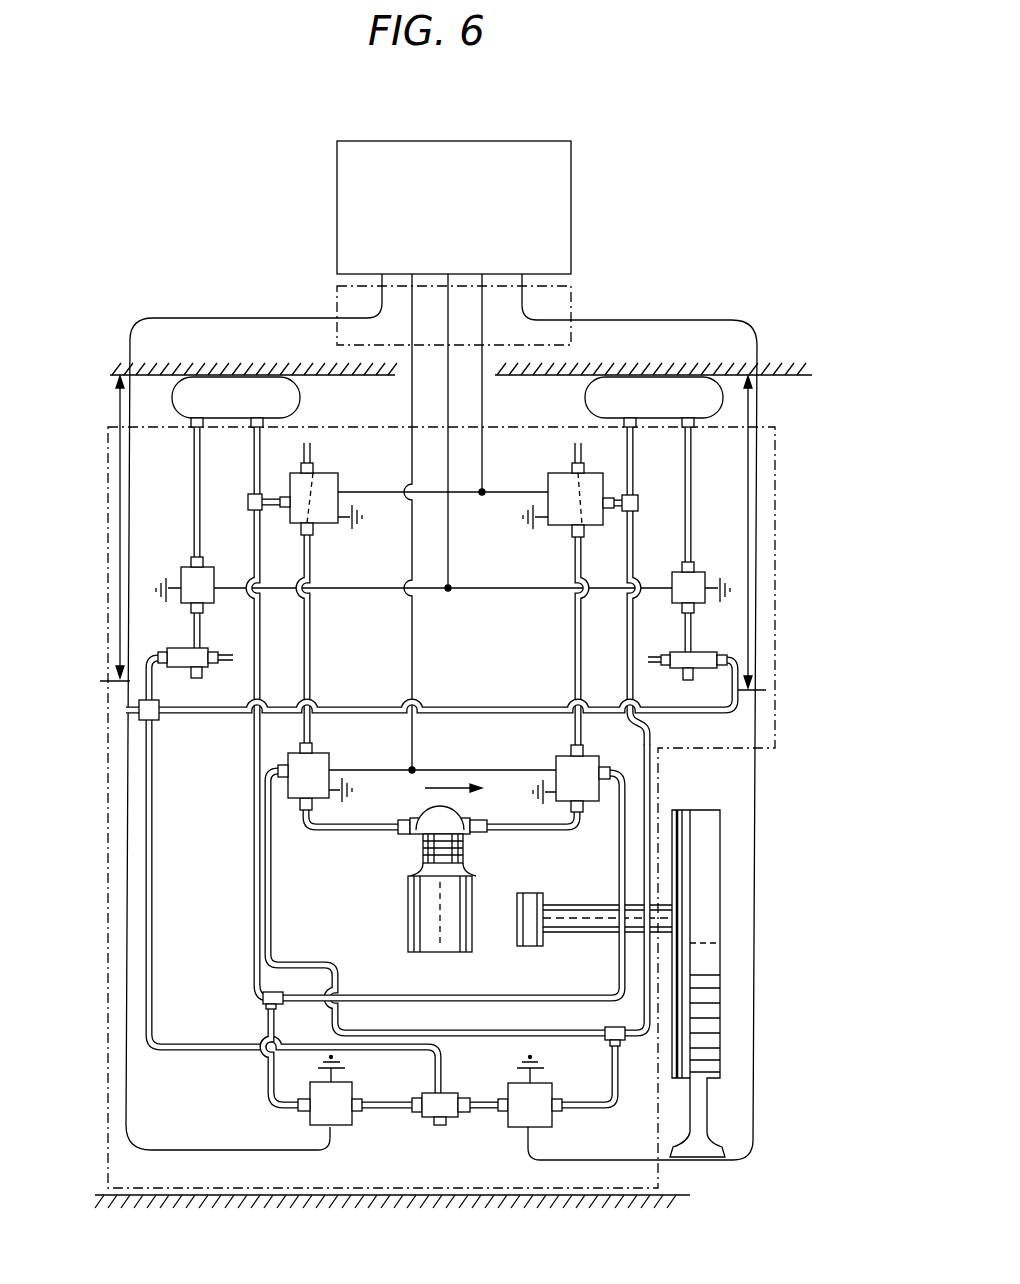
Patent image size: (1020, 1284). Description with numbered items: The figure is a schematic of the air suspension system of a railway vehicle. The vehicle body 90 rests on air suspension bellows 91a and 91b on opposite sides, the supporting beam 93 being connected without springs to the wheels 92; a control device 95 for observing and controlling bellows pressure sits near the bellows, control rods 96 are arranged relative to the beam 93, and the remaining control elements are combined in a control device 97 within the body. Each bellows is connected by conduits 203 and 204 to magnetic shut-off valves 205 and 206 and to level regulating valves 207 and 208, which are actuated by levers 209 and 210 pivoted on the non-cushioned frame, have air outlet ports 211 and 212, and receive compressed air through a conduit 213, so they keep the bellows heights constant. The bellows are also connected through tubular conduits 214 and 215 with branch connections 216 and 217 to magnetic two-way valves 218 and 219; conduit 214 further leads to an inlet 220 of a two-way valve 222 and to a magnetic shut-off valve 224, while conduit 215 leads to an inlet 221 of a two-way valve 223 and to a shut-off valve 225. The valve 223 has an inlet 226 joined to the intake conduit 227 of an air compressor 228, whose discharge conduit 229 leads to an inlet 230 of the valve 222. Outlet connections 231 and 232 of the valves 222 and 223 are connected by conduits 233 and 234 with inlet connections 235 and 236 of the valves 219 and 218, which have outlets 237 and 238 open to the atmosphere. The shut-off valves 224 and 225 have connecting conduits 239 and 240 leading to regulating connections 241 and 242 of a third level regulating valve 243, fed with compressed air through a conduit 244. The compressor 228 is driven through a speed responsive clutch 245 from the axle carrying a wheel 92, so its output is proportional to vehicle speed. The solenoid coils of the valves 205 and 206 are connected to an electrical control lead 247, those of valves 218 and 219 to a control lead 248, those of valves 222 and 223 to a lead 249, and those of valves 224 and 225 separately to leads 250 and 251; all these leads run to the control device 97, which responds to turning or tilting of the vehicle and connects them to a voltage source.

The vehicle body 90 is at (472, 1200).
The air suspension bellows 91a is at (223, 388).
The air suspension bellows 91b is at (640, 388).
The wheel 92 is at (695, 812).
The beam 93 is at (125, 370).
The control device 95 is at (95, 754).
The control rods 96 is at (118, 522).
The control device 97 is at (558, 197).
The conduit 203 is at (194, 480).
The conduit 204 is at (691, 485).
The magnetic shut-off valve 205 is at (194, 560).
The magnetic shut-off valve 206 is at (695, 562).
The level regulating valve 207 is at (188, 648).
The level regulating valve 208 is at (695, 652).
The lever 209 is at (175, 678).
The lever 210 is at (698, 682).
The air outlet port 211 is at (243, 622).
The air outlet port 212 is at (683, 648).
The conduit 213 is at (343, 706).
The tubular conduit 214 is at (260, 441).
The tubular conduit 215 is at (633, 478).
The branch connection 216 is at (282, 510).
The branch connection 217 is at (612, 512).
The magnetic two-way valve 218 is at (340, 480).
The magnetic two-way valve 219 is at (550, 470).
The inlet 220 is at (646, 750).
The inlet 221 is at (287, 763).
The magnetic two-way valve 222 is at (556, 762).
The magnetic two-way valve 223 is at (332, 770).
The magnetic shut-off valve 224 is at (310, 1093).
The magnetic shut-off valve 225 is at (540, 1083).
The inlet 226 is at (304, 812).
The intake conduit 227 is at (363, 834).
The air compressor 228 is at (414, 918).
The discharge conduit 229 is at (537, 832).
The inlet 230 is at (585, 815).
The outlet connection 231 is at (580, 752).
The outlet connection 232 is at (314, 748).
The conduit 233 is at (576, 650).
The conduit 234 is at (311, 652).
The inlet connection 235 is at (573, 532).
The inlet connection 236 is at (314, 528).
The outlet 237 is at (318, 471).
The outlet 238 is at (577, 468).
The connecting conduit 239 is at (380, 1110).
The connecting conduit 240 is at (490, 1112).
The regulating connection 241 is at (415, 1093).
The regulating connection 242 is at (467, 1096).
The third level regulating valve 243 is at (460, 1120).
The conduit 244 is at (152, 897).
The speed responsive clutch 245 is at (543, 946).
The electrical control lead 247 is at (452, 337).
The control lead 248 is at (482, 417).
The electrical control lead 249 is at (412, 357).
The electrical lead 250 is at (215, 317).
The electrical lead 251 is at (635, 318).